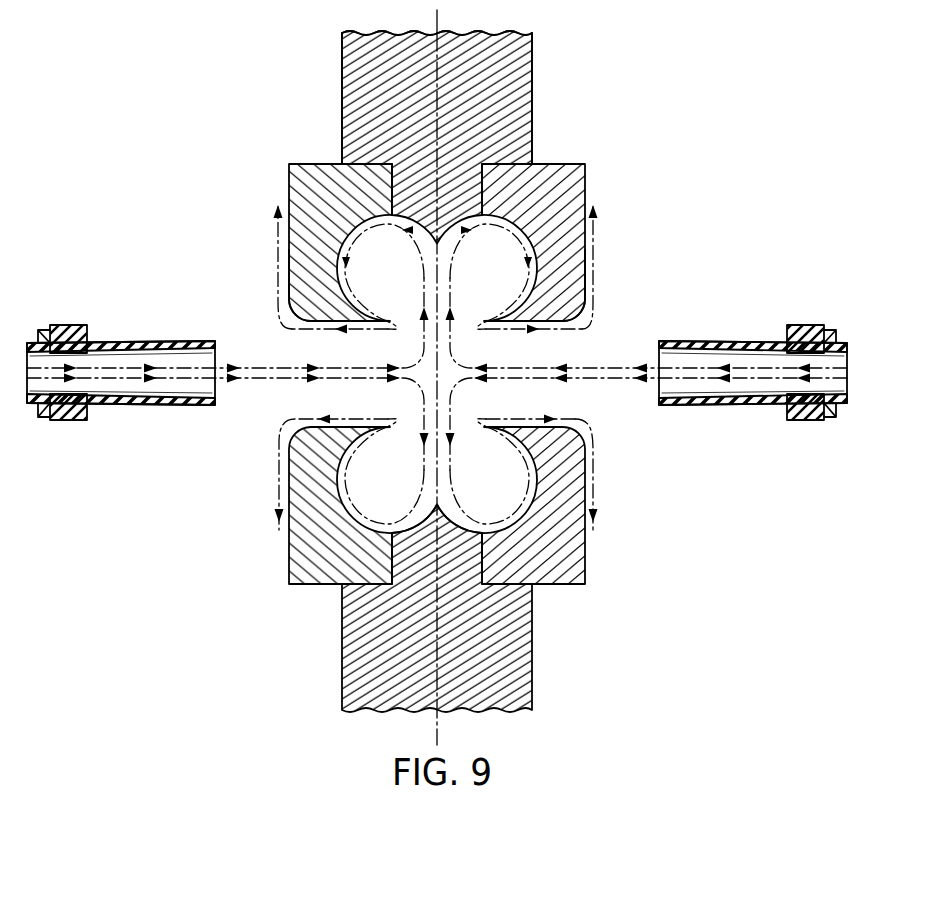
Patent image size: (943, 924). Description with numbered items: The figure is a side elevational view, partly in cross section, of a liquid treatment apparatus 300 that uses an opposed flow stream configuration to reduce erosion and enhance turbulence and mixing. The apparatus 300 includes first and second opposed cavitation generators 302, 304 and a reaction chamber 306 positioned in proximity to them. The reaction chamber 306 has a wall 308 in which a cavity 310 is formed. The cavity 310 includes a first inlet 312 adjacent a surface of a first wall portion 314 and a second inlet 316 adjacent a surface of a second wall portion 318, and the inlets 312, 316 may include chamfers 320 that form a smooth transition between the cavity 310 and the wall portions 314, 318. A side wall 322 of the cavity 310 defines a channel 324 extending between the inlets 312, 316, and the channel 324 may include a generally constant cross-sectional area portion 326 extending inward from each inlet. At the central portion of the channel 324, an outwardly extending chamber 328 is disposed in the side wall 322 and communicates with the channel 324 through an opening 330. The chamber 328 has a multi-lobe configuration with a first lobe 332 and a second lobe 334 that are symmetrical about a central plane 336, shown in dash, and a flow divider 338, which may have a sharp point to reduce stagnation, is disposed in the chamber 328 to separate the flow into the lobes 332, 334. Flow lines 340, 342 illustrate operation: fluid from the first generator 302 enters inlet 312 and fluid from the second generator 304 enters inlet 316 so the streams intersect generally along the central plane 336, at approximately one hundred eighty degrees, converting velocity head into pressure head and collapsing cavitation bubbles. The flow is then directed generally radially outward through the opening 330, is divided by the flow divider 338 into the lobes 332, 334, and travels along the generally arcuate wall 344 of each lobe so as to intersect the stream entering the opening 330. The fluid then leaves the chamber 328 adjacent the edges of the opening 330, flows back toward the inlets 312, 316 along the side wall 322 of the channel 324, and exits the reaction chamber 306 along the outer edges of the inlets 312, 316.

The liquid treatment apparatus 300 is at (155, 111).
The first cavitation generator 302 is at (109, 328).
The second cavitation generator 304 is at (761, 328).
The reaction chamber 306 is at (534, 78).
The wall 308 is at (428, 36).
The cavity 310 is at (564, 402).
The first inlet 312 is at (303, 325).
The first wall portion 314 is at (342, 100).
The second inlet 316 is at (588, 299).
The second wall portion 318 is at (535, 118).
The chamfers 320 is at (244, 470).
The side wall 322 is at (523, 312).
The channel 324 is at (560, 323).
The generally constant cross-sectional area portion 326 is at (325, 297).
The chamber 328 is at (392, 272).
The opening 330 is at (392, 331).
The first lobe 332 is at (375, 213).
The second lobe 334 is at (499, 217).
The central plane 336 is at (441, 24).
The flow divider 338 is at (437, 507).
The flow line 340 is at (278, 381).
The flow line 342 is at (590, 342).
The generally arcuate wall 344 is at (283, 236).